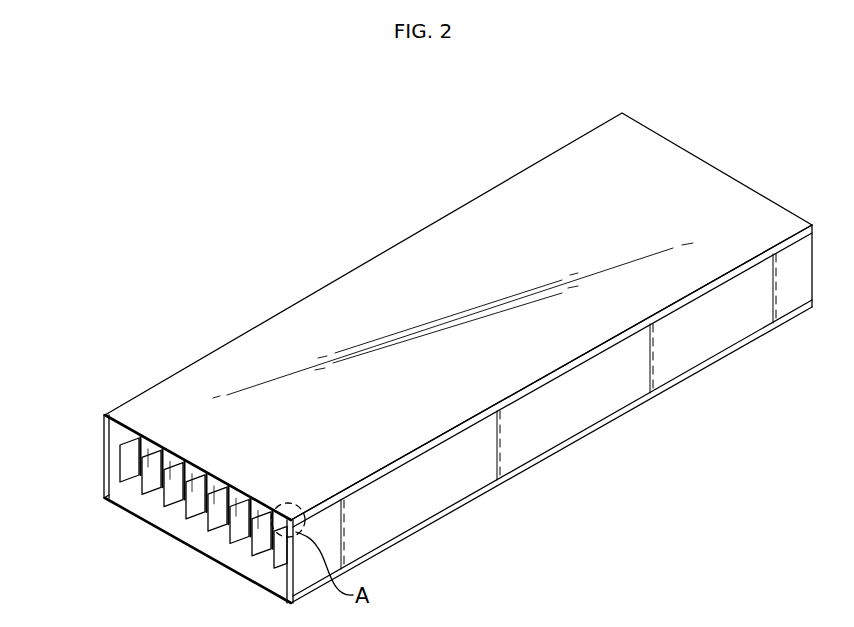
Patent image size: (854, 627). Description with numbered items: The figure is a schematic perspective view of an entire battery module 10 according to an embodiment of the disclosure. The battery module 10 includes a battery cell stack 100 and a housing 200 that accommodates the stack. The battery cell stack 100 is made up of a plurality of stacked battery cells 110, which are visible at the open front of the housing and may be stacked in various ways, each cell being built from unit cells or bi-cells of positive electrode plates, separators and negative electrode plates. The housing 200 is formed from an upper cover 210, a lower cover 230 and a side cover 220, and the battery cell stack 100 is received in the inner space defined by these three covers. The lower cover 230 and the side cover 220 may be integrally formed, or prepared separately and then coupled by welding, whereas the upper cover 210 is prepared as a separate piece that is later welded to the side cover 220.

The battery module 10 is at (251, 98).
The battery cell stack 100 is at (93, 436).
The battery cell 110 is at (130, 463).
The housing 200 is at (326, 253).
The upper cover 210 is at (460, 228).
The side cover 220 is at (577, 428).
The lower cover 230 is at (215, 550).